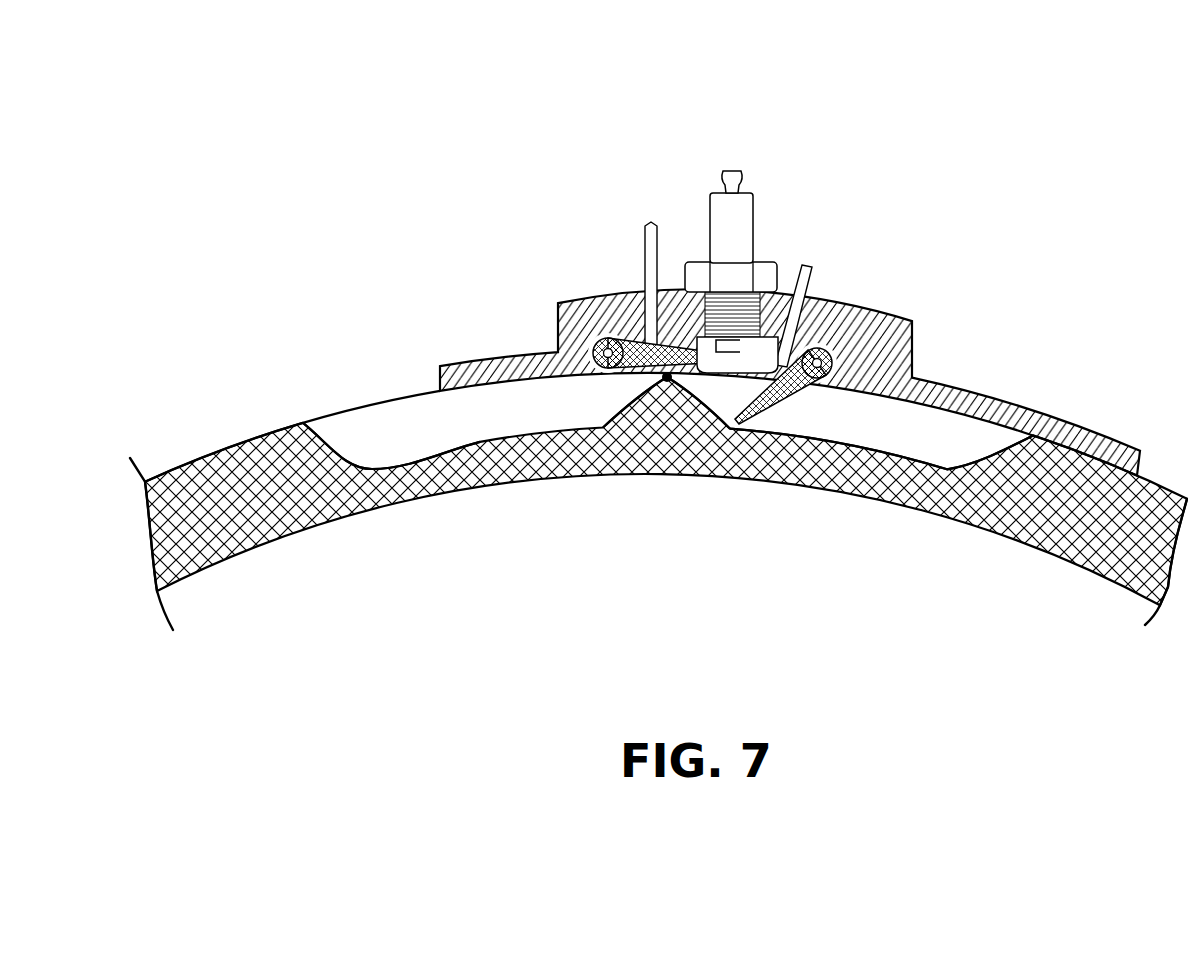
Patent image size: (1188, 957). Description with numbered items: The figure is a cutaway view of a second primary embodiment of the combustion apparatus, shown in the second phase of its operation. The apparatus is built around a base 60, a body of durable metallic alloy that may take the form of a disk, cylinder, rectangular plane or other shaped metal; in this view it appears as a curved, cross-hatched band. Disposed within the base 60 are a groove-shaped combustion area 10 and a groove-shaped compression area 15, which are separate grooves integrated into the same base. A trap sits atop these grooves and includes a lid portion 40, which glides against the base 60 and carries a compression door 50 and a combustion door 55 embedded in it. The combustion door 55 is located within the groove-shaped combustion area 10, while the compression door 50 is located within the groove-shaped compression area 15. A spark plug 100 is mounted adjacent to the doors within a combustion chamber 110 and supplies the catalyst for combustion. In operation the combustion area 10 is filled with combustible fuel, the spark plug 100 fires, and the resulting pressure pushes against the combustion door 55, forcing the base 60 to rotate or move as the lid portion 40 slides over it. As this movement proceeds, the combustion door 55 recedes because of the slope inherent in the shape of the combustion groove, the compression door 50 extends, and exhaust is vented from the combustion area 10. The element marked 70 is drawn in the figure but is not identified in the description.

The groove-shaped combustion area 10 is at (925, 437).
The groove-shaped compression area 15 is at (527, 400).
The lid portion 40 is at (968, 400).
The compression door 50 is at (633, 352).
The combustion door 55 is at (752, 392).
The base 60 is at (283, 517).
The recess 70 is at (330, 450).
The spark plug 100 is at (720, 337).
The combustion chamber 110 is at (750, 378).